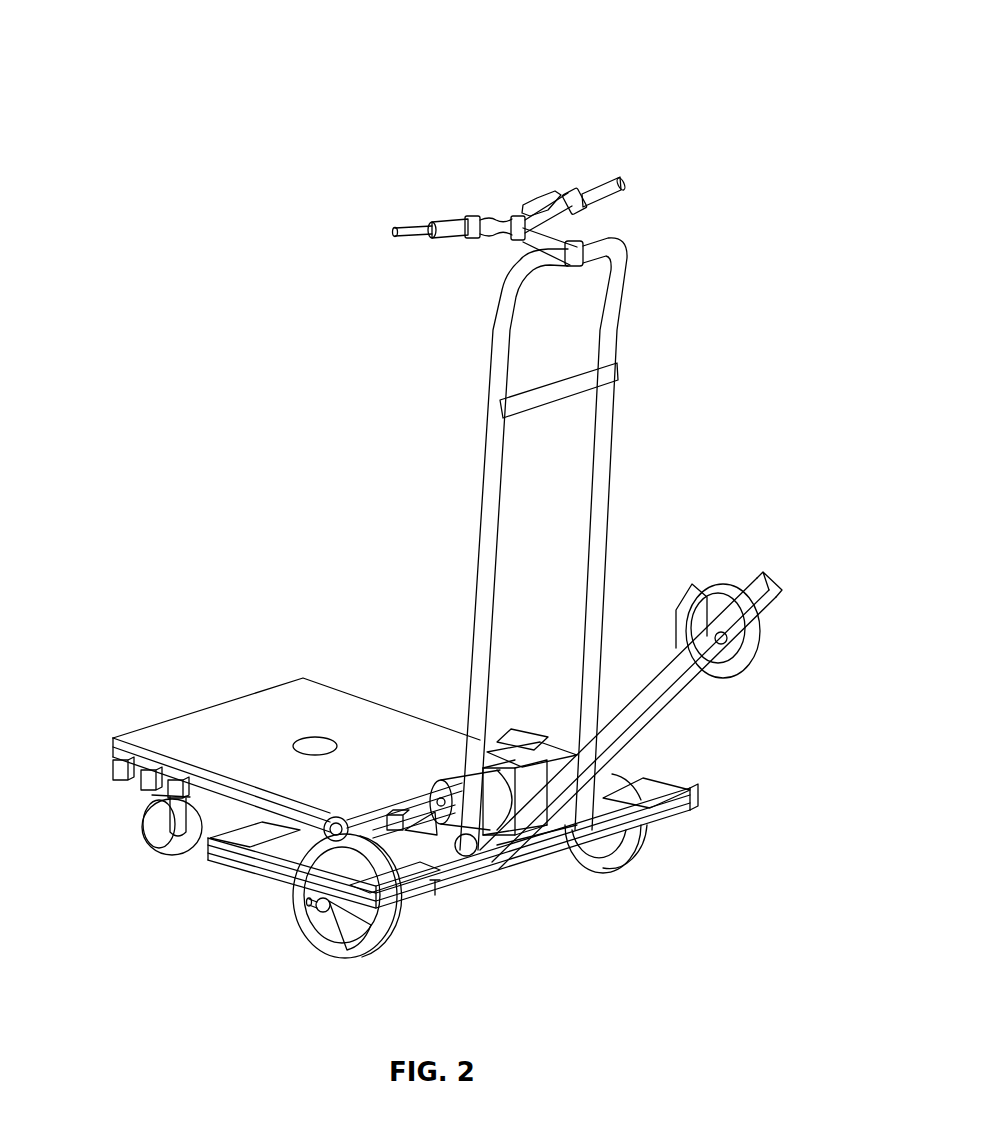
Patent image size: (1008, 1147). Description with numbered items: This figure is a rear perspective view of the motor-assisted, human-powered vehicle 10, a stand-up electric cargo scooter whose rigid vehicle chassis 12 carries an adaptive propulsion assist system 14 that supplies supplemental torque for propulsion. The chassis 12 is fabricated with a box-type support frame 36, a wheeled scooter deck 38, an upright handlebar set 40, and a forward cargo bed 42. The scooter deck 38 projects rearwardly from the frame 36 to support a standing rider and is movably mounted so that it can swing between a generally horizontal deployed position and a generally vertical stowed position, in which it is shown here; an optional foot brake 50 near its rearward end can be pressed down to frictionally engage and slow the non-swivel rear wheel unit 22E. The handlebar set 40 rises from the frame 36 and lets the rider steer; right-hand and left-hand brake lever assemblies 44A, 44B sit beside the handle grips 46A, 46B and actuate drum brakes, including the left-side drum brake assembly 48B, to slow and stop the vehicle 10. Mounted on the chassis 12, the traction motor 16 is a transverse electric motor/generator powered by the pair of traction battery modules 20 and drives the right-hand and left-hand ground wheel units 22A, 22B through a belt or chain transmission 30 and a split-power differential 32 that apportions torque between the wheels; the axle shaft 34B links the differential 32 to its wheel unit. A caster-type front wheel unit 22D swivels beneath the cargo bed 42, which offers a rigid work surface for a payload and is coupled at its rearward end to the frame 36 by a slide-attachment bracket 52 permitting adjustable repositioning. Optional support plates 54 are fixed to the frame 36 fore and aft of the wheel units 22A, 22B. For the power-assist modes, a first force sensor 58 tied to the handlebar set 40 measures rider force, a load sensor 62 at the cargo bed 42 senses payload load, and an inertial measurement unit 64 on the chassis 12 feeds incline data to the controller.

The motor-assisted, human-powered vehicle 10 is at (226, 99).
The vehicle chassis 12 is at (748, 832).
The adaptive propulsion assist system 14 is at (540, 628).
The traction motor 16 is at (497, 740).
The traction battery modules 20 is at (567, 740).
The right-hand ground wheel unit 22A is at (620, 853).
The left-hand ground wheel unit 22B is at (373, 940).
The caster-type front wheel unit 22D is at (158, 845).
The rear wheel unit 22E is at (748, 650).
The transmission 30 is at (434, 782).
The differential gear train 32 is at (437, 880).
The axle shaft 34B is at (313, 910).
The box-type support frame 36 is at (253, 870).
The scooter deck 38 is at (660, 670).
The handlebar set 40 is at (612, 423).
The platform 42 is at (183, 725).
The right-hand brake lever assembly 44A is at (540, 193).
The left-hand brake lever assembly 44B is at (456, 218).
The right-hand handle grip 46A is at (614, 181).
The left-hand handle grip 46B is at (430, 233).
The left-side drum brake assembly 48B is at (350, 918).
The foot brake 50 is at (692, 583).
The slide-attachment bracket 52 is at (412, 812).
The support plates 54 is at (170, 806).
The first force sensor 58 is at (473, 850).
The load sensor 62 is at (300, 737).
The inertial measurement unit 64 is at (388, 812).